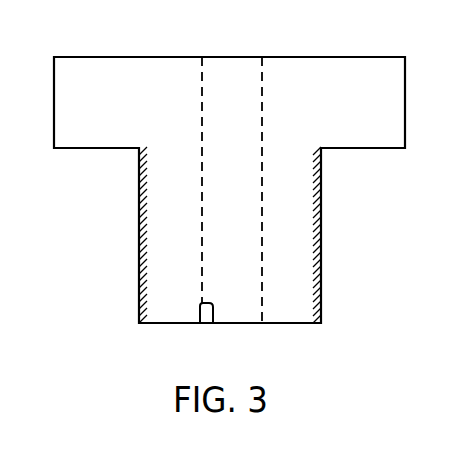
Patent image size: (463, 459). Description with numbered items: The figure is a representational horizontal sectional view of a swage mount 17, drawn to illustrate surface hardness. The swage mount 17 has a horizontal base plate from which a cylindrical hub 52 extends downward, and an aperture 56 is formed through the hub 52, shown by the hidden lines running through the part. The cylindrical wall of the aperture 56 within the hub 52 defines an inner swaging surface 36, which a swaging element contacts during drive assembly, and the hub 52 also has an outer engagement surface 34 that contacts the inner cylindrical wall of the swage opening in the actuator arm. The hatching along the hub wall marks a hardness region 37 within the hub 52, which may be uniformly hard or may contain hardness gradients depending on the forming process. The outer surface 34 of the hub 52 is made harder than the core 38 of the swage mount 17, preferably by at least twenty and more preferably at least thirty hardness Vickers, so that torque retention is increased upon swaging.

The swage mount 17 is at (370, 57).
The aperture 56 is at (226, 60).
The hardness region 37 is at (139, 242).
The outer engagement surface 34 is at (321, 233).
The inner swaging surface 36 is at (213, 322).
The core 38 is at (163, 309).
The cylindrical hub 52 is at (300, 323).